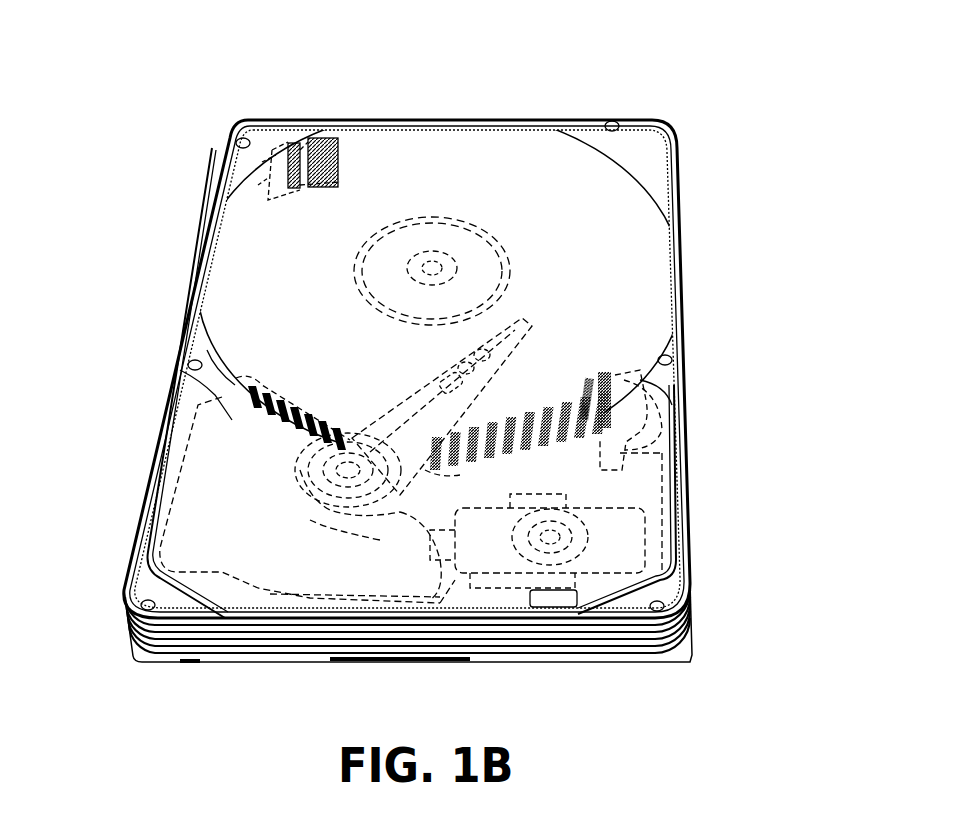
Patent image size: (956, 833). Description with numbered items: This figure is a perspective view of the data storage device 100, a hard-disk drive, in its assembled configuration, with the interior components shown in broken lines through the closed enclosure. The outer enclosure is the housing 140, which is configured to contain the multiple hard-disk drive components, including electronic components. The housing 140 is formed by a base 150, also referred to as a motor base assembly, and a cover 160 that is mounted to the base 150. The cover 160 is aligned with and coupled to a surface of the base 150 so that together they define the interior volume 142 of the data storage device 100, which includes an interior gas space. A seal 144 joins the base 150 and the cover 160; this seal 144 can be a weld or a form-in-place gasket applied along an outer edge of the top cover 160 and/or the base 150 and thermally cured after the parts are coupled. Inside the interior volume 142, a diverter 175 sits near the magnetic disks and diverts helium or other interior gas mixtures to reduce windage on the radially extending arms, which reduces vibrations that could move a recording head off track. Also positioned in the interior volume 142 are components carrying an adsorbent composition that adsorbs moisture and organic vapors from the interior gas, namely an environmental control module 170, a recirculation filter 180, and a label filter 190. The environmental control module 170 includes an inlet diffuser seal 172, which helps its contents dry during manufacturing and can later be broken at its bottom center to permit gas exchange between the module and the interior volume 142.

The data storage device 100 is at (236, 56).
The housing 140 is at (697, 660).
The interior volume 142 is at (614, 486).
The seal 144 is at (682, 207).
The base 150 is at (123, 630).
The cover 160 is at (420, 197).
The environmental control module 170 is at (600, 557).
The inlet diffuser seal 172 is at (526, 549).
The diverter 175 is at (322, 125).
The recirculation filter 180 is at (289, 126).
The label filter 190 is at (553, 618).